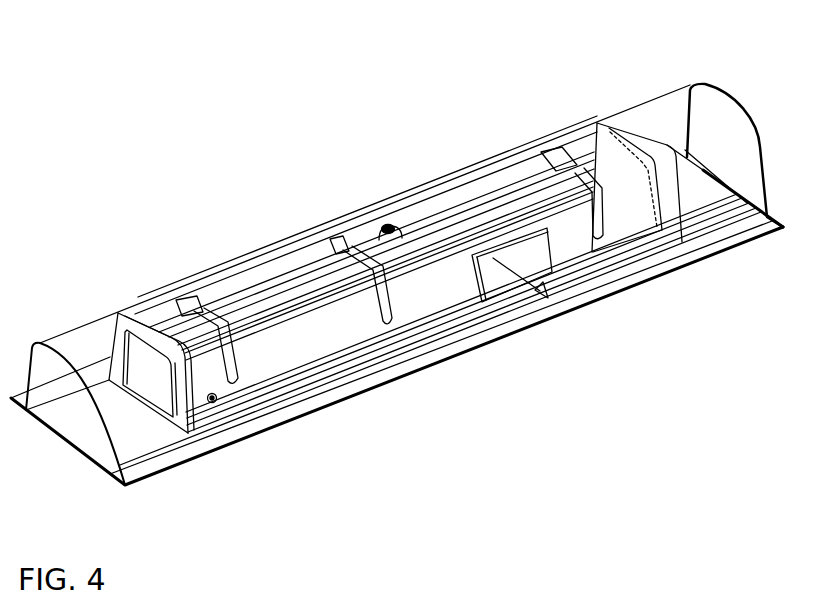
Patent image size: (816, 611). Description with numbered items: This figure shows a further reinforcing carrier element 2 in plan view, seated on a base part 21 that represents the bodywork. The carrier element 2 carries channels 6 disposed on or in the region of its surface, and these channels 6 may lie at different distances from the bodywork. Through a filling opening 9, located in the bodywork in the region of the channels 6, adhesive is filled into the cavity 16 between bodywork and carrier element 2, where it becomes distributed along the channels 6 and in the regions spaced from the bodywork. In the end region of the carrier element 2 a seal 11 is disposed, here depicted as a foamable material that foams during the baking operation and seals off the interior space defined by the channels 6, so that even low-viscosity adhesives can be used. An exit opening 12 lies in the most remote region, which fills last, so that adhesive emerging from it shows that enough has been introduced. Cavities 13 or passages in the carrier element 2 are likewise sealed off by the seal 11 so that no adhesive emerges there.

The carrier element 2 is at (217, 293).
The channels 6 is at (330, 243).
The filling opening 9 is at (383, 228).
The seal 11 is at (140, 318).
The exit opening 12 is at (213, 398).
The cavities 13 is at (507, 283).
The cavity 16 is at (542, 152).
The base plate 21 is at (138, 475).